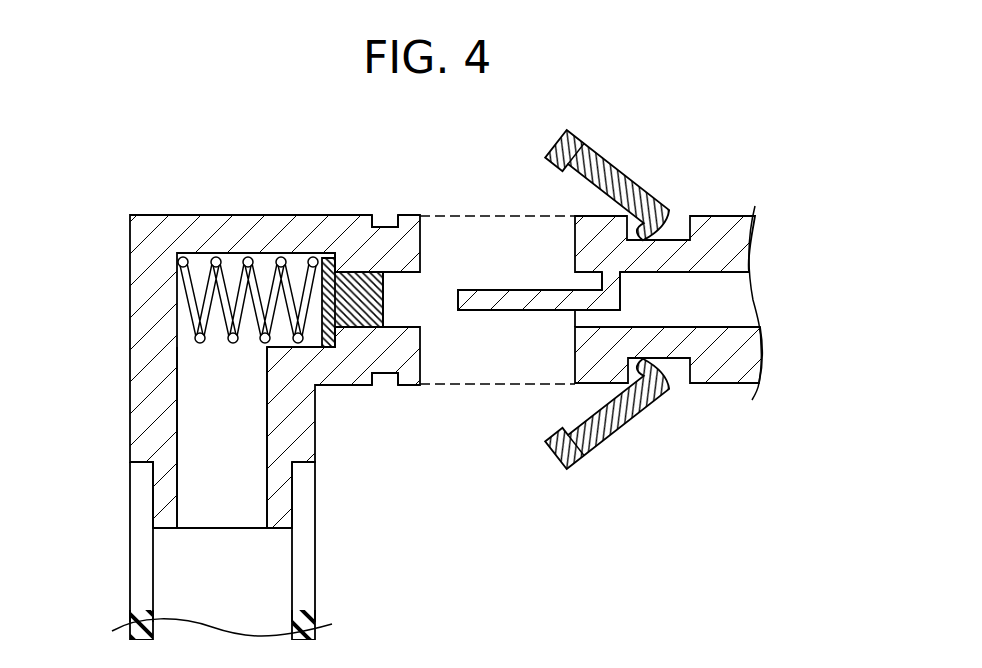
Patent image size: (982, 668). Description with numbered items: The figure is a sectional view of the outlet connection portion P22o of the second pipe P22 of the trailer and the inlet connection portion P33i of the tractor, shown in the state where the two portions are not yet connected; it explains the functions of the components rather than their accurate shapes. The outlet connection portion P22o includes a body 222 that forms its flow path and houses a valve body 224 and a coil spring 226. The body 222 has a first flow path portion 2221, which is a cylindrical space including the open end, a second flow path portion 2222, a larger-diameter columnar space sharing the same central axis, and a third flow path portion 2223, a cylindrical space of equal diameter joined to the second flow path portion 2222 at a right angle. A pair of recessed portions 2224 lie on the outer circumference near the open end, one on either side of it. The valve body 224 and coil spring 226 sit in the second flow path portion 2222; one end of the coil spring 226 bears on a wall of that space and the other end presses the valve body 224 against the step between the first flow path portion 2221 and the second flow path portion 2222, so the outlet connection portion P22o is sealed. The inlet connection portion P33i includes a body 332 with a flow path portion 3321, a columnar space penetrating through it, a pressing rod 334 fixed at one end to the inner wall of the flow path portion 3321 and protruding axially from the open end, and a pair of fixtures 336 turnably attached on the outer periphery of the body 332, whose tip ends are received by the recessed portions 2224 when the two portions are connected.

The body 222 is at (249, 215).
The first flow path portion 2221 is at (402, 313).
The second flow path portion 2222 is at (180, 323).
The third flow path portion 2223 is at (205, 410).
The recessed portion 2224 is at (383, 215).
The valve body 224 is at (323, 258).
The coil spring 226 is at (212, 253).
The body 332 is at (726, 216).
The flow path portion 3321 is at (732, 307).
The pressing rod 334 is at (500, 290).
The fixture 336 is at (598, 153).
The second pipe P22 is at (107, 539).
The outlet connection portion P22o is at (138, 118).
The inlet connection portion P33i is at (727, 94).